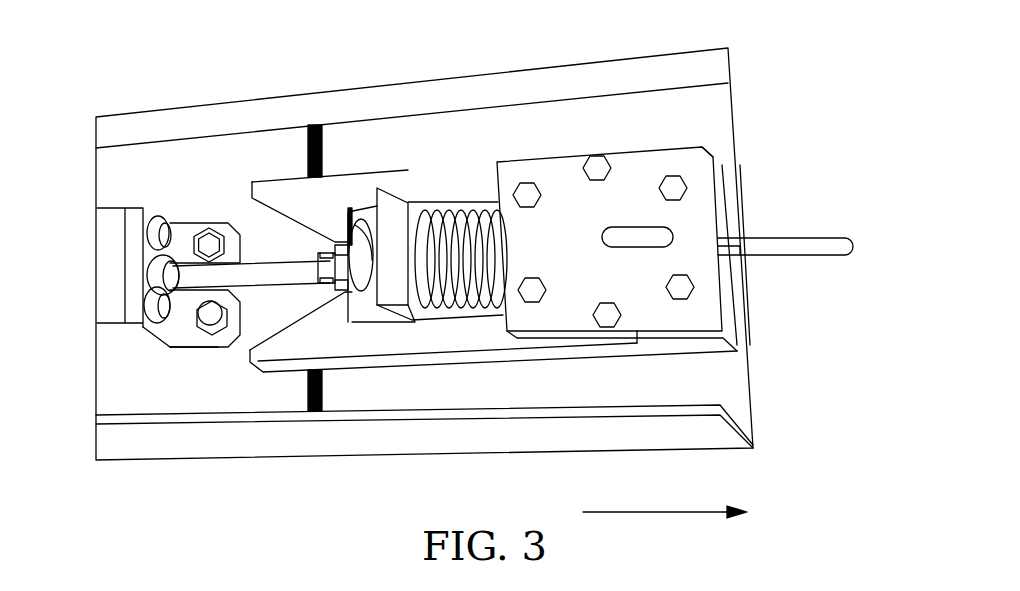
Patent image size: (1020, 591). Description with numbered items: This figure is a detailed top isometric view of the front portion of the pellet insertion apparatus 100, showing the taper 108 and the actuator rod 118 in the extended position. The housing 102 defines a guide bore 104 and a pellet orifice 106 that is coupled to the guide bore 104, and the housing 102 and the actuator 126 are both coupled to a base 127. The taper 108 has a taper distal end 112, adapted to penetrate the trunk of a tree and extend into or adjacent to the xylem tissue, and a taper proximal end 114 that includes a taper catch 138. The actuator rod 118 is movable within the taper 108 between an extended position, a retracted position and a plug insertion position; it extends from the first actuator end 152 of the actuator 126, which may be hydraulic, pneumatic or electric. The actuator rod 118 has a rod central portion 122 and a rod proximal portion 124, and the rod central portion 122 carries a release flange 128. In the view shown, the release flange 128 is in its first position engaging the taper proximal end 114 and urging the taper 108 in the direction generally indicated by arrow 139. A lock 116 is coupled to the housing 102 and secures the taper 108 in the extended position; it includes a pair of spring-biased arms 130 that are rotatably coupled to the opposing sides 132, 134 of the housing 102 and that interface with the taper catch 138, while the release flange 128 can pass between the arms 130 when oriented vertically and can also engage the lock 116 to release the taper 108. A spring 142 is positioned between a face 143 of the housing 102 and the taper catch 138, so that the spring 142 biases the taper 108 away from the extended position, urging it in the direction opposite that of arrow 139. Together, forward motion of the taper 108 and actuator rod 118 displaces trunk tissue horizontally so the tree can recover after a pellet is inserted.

The pellet insertion apparatus 100 is at (192, 46).
The housing 102 is at (683, 162).
The guide bore 104 is at (720, 212).
The pellet orifice 106 is at (623, 237).
The taper 108 is at (785, 257).
The taper distal end 112 is at (762, 252).
The taper proximal end 114 is at (397, 325).
The lock 116 is at (346, 218).
The actuator rod 118 is at (843, 245).
The rod central portion 122 is at (285, 275).
The rod proximal portion 124 is at (183, 277).
The actuator 126 is at (113, 272).
The base 127 is at (238, 416).
The release flange 128 is at (335, 242).
The spring-biased arms 130 is at (360, 187).
The side of housing 132 is at (667, 148).
The side of housing 134 is at (682, 333).
The taper catch 138 is at (410, 200).
The arrow 139 is at (665, 512).
The spring 142 is at (490, 208).
The face of housing 143 is at (507, 312).
The first actuator end 152 is at (133, 220).